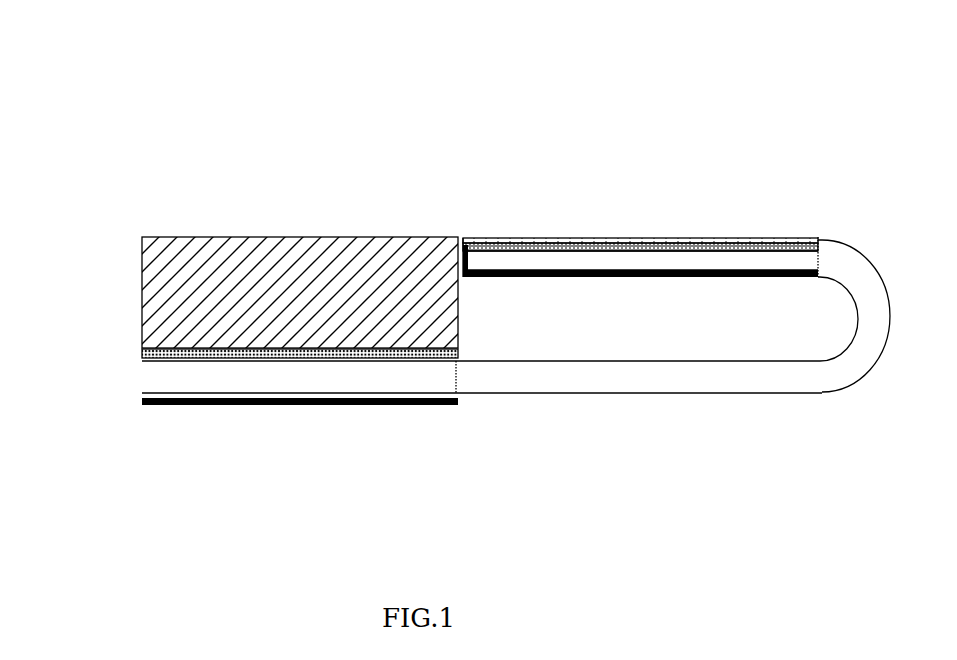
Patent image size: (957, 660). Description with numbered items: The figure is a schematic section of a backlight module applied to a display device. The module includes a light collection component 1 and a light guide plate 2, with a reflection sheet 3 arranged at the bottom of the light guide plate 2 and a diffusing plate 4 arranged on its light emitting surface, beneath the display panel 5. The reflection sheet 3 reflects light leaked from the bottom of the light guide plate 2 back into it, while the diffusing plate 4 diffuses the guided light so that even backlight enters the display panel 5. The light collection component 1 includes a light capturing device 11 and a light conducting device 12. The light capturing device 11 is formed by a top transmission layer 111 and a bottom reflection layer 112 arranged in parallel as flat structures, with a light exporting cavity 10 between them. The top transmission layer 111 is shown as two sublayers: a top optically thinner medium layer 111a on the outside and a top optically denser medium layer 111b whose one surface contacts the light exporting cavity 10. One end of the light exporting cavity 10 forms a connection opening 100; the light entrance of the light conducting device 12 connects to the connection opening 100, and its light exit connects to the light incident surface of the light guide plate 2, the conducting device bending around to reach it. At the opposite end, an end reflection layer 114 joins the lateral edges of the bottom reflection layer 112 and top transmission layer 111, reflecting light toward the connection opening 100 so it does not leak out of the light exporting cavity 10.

The light collection component 1 is at (475, 60).
The light guide plate 2 is at (392, 382).
The reflection sheet 3 is at (142, 402).
The diffusing plate 4 is at (142, 352).
The display panel 5 is at (142, 302).
The light exporting cavity 10 is at (695, 262).
The light capturing device 11 is at (790, 113).
The light conducting device 12 is at (844, 267).
The connection opening 100 is at (815, 258).
The top transmission layer 111 is at (548, 158).
The top optically thinner medium layer 111a is at (542, 243).
The top optically denser medium layer 111b is at (599, 252).
The bottom reflection layer 112 is at (646, 270).
The end reflection layer 114 is at (462, 240).